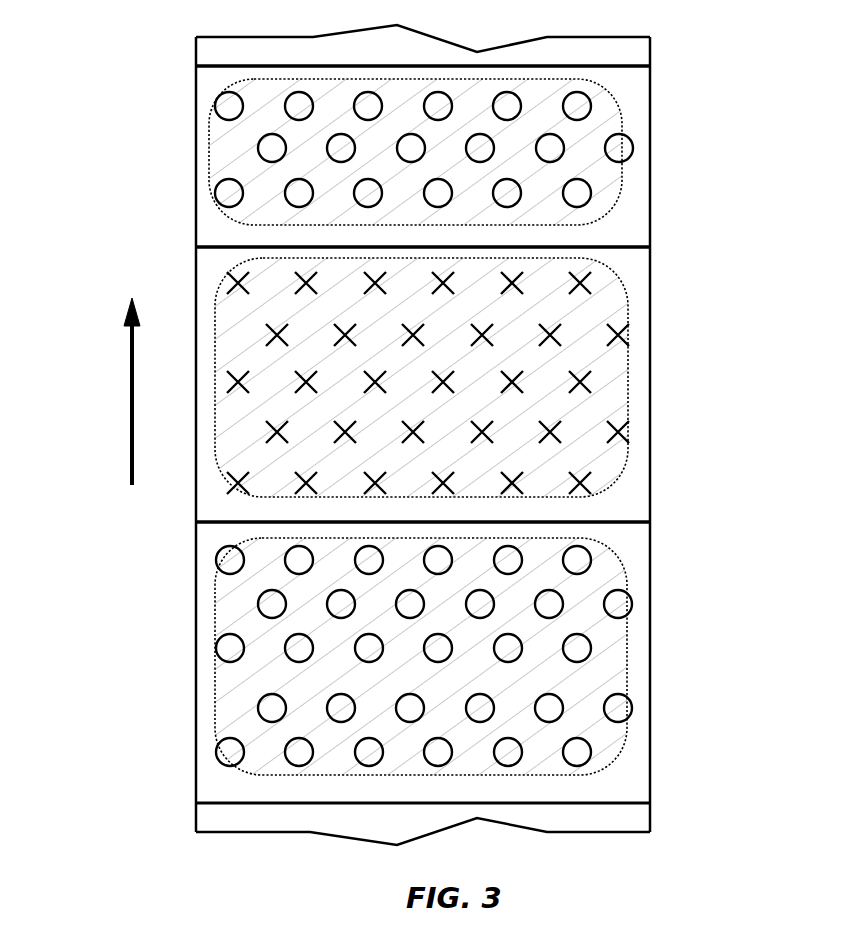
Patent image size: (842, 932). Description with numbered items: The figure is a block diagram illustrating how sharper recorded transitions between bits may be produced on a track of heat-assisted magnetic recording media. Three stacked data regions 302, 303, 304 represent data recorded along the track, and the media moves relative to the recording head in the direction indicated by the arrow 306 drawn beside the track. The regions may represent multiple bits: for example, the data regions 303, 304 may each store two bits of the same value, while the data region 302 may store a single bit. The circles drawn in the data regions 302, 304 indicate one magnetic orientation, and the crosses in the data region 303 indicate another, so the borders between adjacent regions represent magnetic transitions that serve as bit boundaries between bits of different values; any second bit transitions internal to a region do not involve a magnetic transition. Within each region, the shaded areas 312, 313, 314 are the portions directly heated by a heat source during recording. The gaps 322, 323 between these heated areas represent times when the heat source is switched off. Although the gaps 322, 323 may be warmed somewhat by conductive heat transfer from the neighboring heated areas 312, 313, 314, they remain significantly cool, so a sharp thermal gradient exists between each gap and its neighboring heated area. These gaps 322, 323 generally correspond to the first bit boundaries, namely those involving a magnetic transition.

The data region 302 is at (638, 174).
The data region 303 is at (643, 393).
The data region 304 is at (642, 647).
The shaded area 312 is at (605, 102).
The shaded area 313 is at (612, 292).
The shaded area 314 is at (612, 567).
The gap 322 is at (612, 232).
The gap 323 is at (622, 508).
The arrow 306 is at (135, 383).